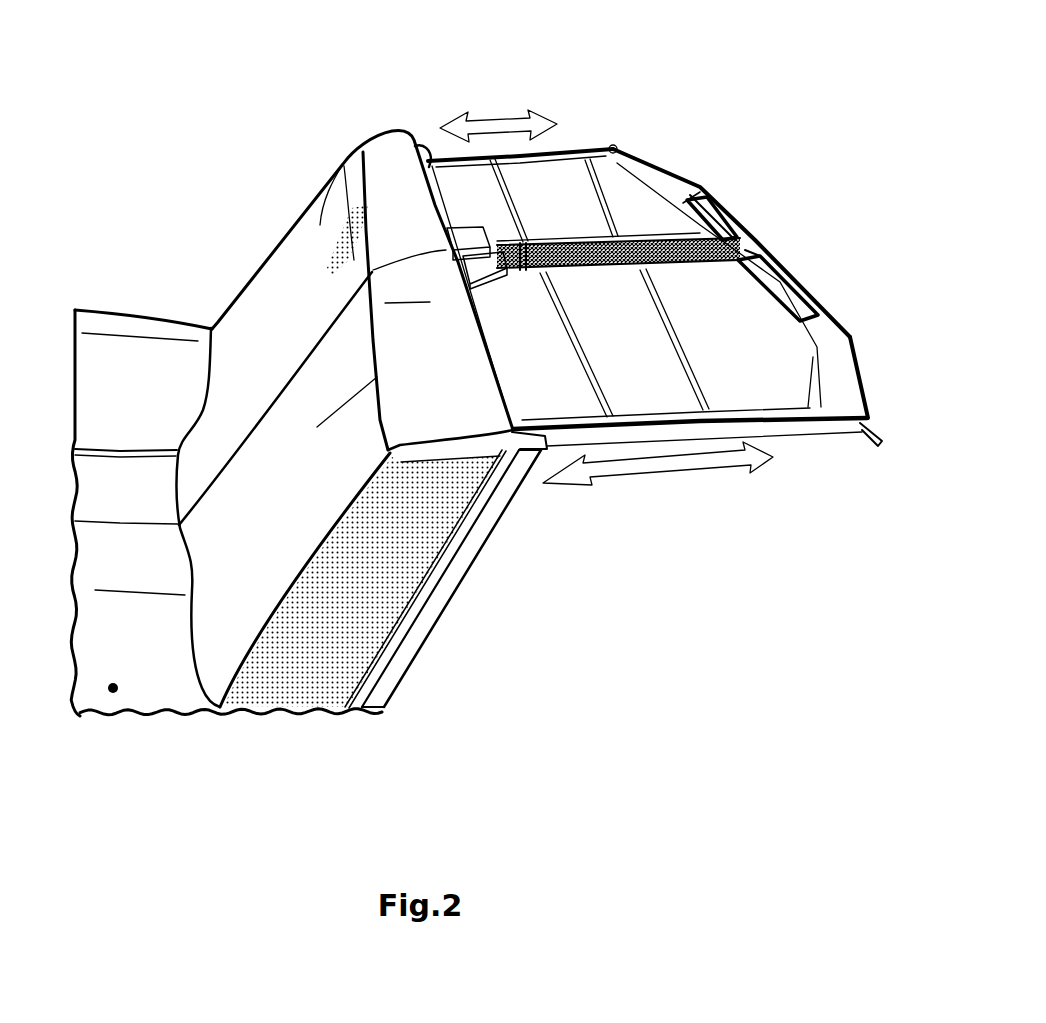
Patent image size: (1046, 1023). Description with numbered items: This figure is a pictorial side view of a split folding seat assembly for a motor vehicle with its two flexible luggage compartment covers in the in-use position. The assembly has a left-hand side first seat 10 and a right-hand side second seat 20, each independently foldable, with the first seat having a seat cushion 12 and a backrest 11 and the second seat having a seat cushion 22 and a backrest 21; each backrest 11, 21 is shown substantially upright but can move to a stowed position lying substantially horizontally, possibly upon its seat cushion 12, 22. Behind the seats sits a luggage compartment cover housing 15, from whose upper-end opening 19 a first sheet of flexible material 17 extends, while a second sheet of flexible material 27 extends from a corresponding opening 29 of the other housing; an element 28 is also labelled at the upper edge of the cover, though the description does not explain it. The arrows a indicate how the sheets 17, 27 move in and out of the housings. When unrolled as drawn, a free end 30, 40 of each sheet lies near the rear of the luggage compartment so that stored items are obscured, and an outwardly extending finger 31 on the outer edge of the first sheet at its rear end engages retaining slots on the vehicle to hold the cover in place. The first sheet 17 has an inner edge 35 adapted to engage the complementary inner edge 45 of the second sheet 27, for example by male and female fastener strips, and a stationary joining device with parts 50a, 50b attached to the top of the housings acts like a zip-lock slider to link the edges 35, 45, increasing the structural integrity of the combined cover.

The first seat 10 is at (165, 716).
The backrest 11 is at (237, 667).
The seat cushion 12 is at (113, 688).
The luggage compartment cover housing 15 is at (425, 647).
The sheet of flexible material 17 is at (797, 357).
The opening 19 is at (540, 440).
The second seat 20 is at (247, 263).
The backrest 21 is at (317, 193).
The seat cushion 22 is at (128, 311).
The sheet of flexible material 27 is at (697, 187).
The upper rail attachment 28 is at (617, 147).
The opening 29 is at (423, 150).
The free end 30 is at (790, 283).
The finger 31 is at (867, 443).
The inner edge 35 is at (750, 223).
The free end 40 is at (740, 233).
The inner edge 45 is at (693, 243).
The joining device part 50a is at (521, 246).
The joining device part 50b is at (437, 190).
The arrows a is at (500, 117).